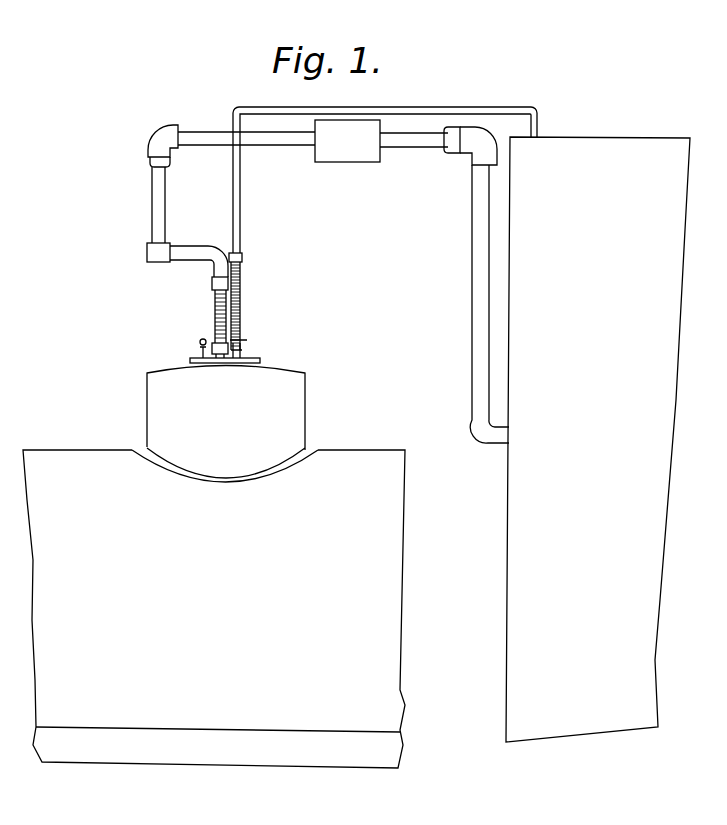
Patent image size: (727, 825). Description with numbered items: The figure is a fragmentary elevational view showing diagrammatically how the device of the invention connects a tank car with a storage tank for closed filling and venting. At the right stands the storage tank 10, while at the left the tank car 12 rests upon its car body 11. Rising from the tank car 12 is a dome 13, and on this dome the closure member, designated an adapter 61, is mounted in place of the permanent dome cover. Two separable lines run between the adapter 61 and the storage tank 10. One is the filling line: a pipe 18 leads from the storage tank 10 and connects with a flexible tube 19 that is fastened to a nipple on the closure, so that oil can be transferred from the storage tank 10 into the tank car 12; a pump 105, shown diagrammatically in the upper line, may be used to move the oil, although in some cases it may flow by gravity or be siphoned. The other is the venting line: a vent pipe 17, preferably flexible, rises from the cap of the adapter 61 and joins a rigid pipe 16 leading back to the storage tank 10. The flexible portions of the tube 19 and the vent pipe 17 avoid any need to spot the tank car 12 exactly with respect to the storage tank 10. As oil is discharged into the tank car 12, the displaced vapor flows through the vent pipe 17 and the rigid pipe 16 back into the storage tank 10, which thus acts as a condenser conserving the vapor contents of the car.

The storage tank 10 is at (598, 439).
The car body 11 is at (177, 749).
The tank car 12 is at (352, 461).
The dome 13 is at (296, 420).
The rigid pipe 16 is at (240, 201).
The vent pipe 17 is at (240, 299).
The pipe 18 is at (155, 201).
The flexible tube 19 is at (220, 307).
The adapter 61 is at (233, 349).
The pump 105 is at (362, 148).